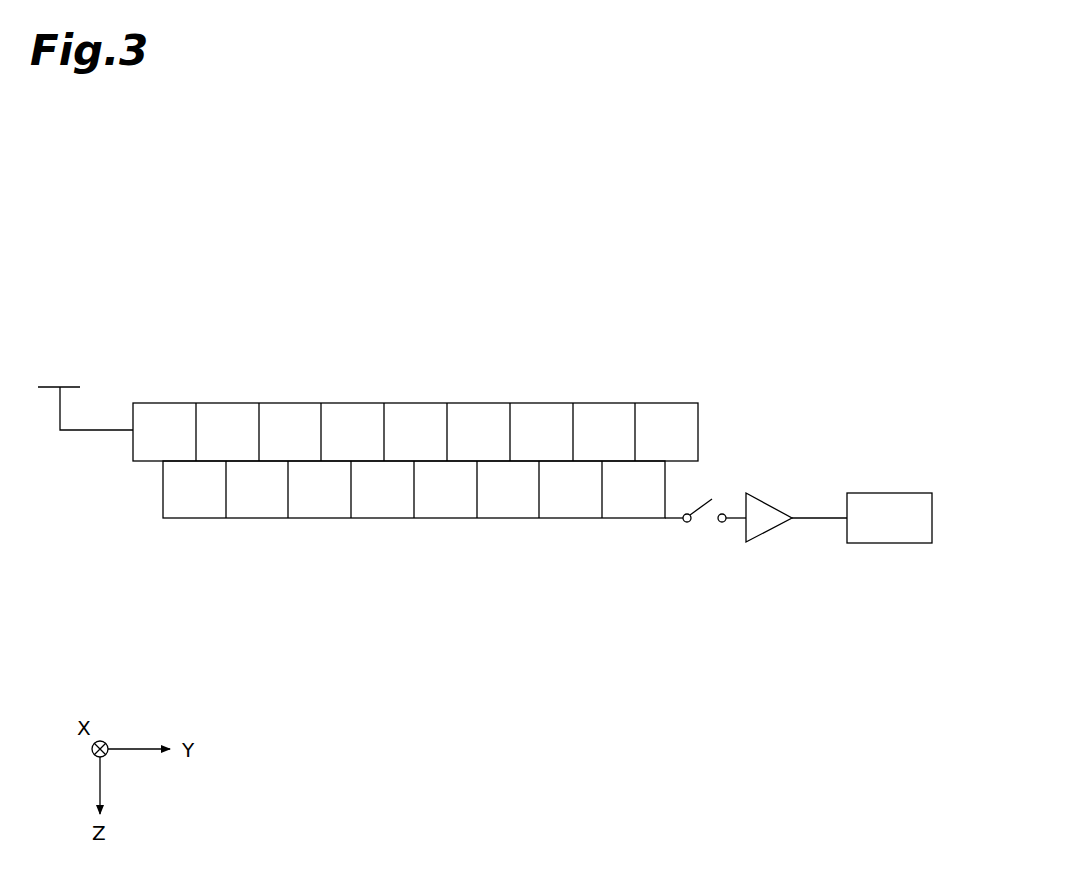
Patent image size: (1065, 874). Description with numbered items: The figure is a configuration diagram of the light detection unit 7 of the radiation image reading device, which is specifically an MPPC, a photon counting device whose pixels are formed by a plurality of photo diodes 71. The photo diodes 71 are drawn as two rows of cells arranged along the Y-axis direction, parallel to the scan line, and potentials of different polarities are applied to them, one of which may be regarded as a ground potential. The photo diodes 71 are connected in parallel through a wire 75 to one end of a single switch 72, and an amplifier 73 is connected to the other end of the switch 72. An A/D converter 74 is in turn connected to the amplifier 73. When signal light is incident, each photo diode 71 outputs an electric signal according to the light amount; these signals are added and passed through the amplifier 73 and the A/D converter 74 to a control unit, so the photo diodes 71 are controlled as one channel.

The light detection unit 7 is at (778, 248).
The photo diode 71 is at (145, 463).
The switch 72 is at (703, 534).
The amplifier 73 is at (765, 531).
The A/D converter 74 is at (887, 543).
The wire 75 is at (442, 518).